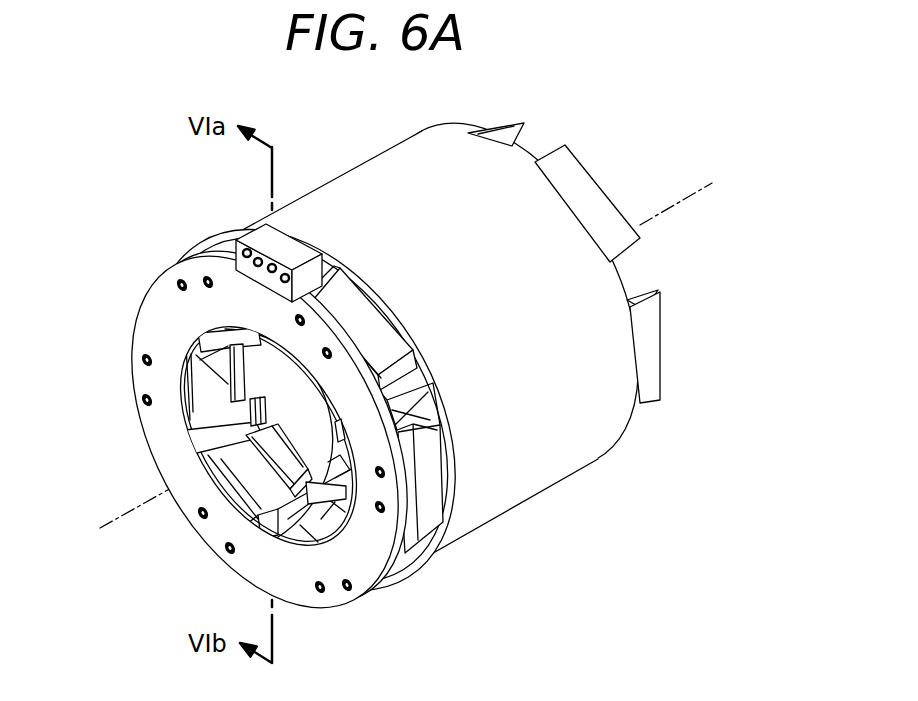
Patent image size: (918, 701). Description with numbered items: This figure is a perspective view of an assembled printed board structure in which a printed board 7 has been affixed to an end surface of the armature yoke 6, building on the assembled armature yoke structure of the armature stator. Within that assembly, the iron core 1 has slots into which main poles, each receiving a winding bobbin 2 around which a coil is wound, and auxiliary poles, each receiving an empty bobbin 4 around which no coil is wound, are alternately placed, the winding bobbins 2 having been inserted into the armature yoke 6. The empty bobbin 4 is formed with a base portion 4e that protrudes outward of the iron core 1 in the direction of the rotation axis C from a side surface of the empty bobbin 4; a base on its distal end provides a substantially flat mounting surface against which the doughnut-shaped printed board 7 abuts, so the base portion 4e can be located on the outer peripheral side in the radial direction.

The iron core 1 is at (285, 392).
The winding bobbin 2 is at (593, 185).
The empty bobbin 4 is at (403, 415).
The base portion 4e is at (338, 432).
The armature yoke 6 is at (397, 158).
The printed board 7 is at (157, 323).
The rotation axis C is at (113, 523).